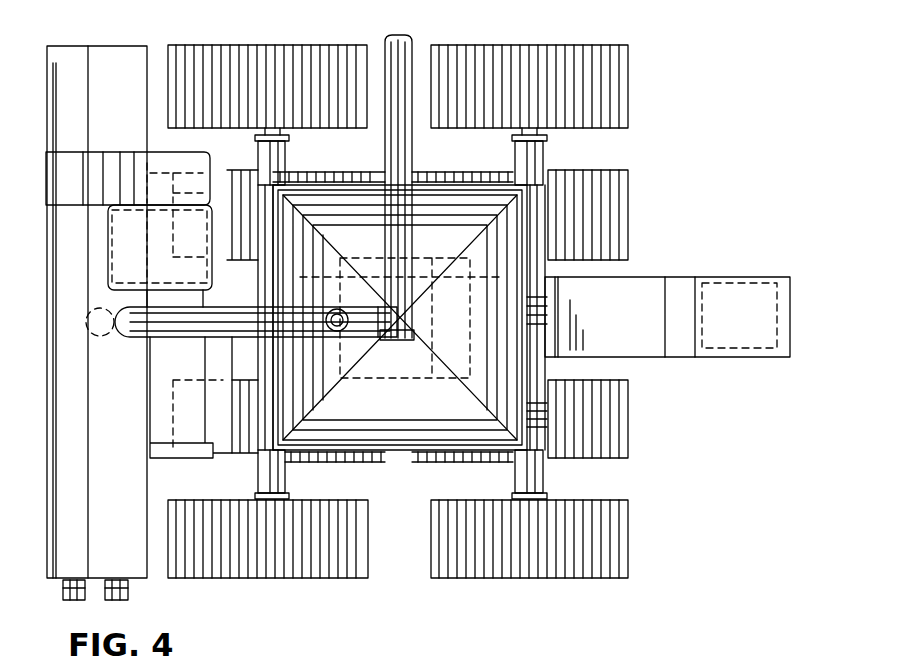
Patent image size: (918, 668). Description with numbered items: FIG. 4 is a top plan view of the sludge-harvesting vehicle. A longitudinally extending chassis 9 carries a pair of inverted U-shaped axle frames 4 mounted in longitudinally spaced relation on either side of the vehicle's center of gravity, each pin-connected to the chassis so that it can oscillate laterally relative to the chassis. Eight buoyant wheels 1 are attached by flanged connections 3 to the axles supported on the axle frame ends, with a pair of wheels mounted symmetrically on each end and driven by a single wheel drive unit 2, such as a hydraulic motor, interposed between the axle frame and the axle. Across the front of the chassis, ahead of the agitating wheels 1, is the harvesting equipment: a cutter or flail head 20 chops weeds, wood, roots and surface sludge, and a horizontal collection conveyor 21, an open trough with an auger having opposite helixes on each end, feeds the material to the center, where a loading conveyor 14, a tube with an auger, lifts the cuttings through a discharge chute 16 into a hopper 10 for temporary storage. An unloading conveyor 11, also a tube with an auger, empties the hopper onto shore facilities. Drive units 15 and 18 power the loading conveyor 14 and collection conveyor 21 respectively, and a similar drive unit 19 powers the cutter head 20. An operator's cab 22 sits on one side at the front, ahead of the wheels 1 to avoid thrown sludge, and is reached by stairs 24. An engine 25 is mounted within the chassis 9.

The buoyant wheels 1 is at (356, 128).
The wheel drive units 2 is at (258, 148).
The flanged connections 3 is at (258, 137).
The axle frames 4 is at (288, 164).
The chassis 9 is at (645, 277).
The hopper 10 is at (410, 453).
The unloading conveyor 11 is at (412, 158).
The loading conveyor 14 is at (197, 327).
The drive unit 15 is at (348, 318).
The discharge chute 16 is at (380, 332).
The drive unit 18 is at (127, 583).
The drive unit 19 is at (82, 583).
The cutter or flail head 20 is at (82, 441).
The horizontal collection conveyor 21 is at (128, 459).
The operator's cab 22 is at (140, 259).
The stairs 24 is at (105, 160).
The engine 25 is at (735, 285).